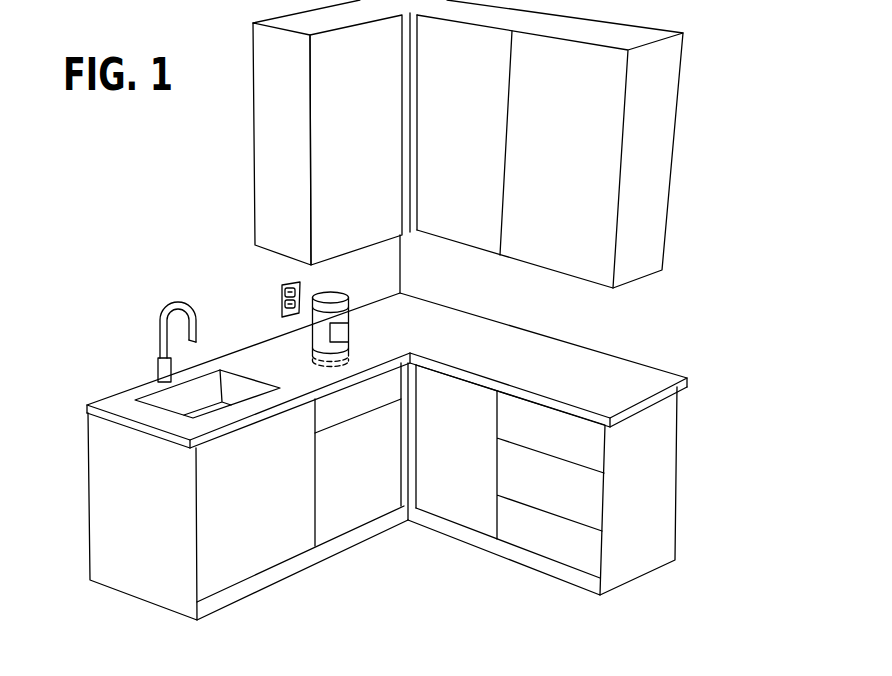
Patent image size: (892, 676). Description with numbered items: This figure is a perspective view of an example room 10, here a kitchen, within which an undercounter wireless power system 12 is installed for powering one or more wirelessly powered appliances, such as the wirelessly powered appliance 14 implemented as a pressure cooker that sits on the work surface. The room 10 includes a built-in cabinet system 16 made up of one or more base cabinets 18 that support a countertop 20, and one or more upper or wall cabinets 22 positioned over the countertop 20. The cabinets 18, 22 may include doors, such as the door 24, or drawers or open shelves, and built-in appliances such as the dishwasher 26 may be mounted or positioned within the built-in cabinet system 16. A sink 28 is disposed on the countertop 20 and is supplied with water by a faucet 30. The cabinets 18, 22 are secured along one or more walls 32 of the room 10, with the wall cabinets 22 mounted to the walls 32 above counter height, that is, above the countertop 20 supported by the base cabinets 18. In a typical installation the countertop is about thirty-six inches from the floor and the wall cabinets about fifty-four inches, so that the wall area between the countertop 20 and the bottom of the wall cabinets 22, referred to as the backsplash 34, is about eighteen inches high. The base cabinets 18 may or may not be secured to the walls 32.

The room 10 is at (90, 204).
The undercounter wireless power system 12 is at (652, 297).
The wirelessly powered appliance 14 is at (320, 335).
The built-in cabinet system 16 is at (692, 86).
The base cabinets 18 is at (672, 447).
The countertop 20 is at (681, 379).
The wall cabinets 22 is at (633, 32).
The door 24 is at (572, 142).
The dishwasher 26 is at (346, 459).
The sink 28 is at (145, 395).
The faucet 30 is at (160, 313).
The walls 32 is at (199, 237).
The backsplash 34 is at (417, 289).